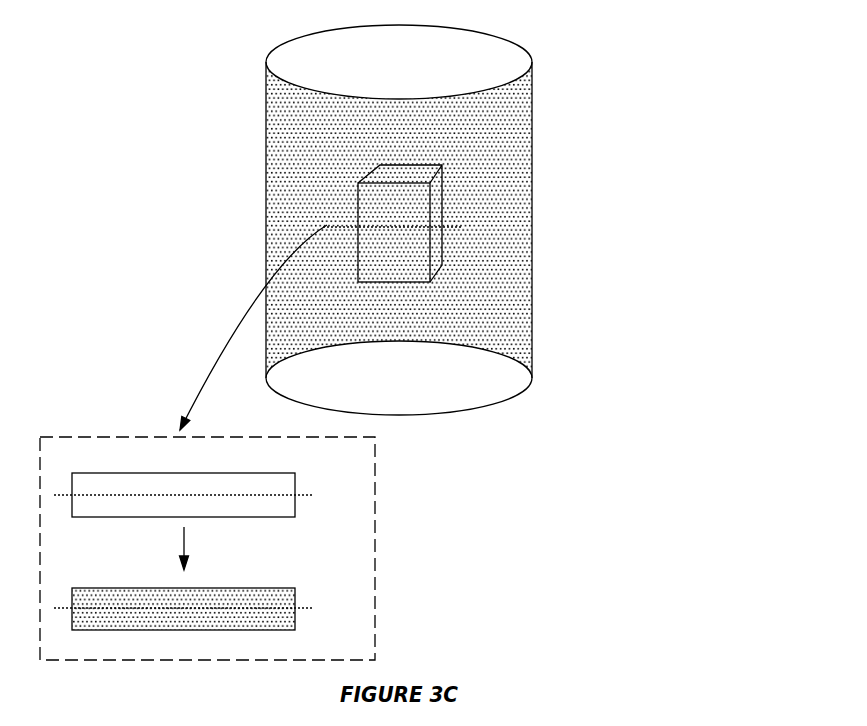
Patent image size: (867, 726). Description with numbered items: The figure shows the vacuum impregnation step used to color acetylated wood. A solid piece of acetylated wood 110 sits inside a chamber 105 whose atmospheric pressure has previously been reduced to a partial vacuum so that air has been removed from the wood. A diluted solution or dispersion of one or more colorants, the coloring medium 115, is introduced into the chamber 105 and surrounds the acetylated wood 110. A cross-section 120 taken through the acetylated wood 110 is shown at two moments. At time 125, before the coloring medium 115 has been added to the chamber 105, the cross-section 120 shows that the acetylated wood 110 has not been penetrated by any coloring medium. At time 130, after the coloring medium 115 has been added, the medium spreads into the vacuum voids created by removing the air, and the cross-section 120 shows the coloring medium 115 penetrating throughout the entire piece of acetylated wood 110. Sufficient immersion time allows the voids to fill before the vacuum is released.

The chamber 105 is at (463, 31).
The acetylated wood 110 is at (418, 164).
The coloring medium 115 is at (502, 210).
The cross-section 120 is at (355, 227).
The time 125 is at (358, 502).
The time 130 is at (358, 618).